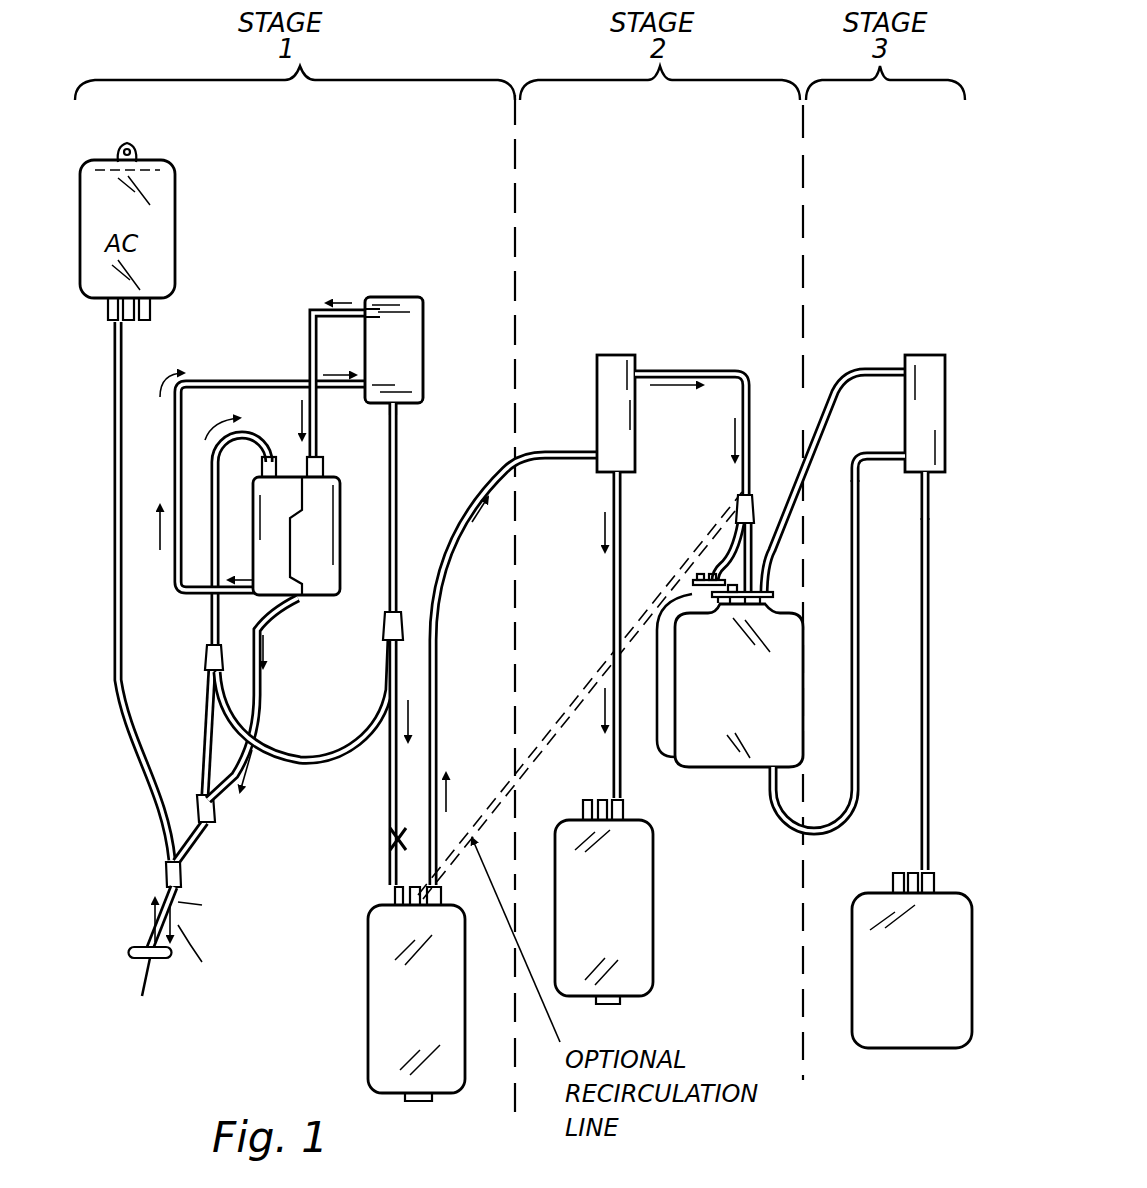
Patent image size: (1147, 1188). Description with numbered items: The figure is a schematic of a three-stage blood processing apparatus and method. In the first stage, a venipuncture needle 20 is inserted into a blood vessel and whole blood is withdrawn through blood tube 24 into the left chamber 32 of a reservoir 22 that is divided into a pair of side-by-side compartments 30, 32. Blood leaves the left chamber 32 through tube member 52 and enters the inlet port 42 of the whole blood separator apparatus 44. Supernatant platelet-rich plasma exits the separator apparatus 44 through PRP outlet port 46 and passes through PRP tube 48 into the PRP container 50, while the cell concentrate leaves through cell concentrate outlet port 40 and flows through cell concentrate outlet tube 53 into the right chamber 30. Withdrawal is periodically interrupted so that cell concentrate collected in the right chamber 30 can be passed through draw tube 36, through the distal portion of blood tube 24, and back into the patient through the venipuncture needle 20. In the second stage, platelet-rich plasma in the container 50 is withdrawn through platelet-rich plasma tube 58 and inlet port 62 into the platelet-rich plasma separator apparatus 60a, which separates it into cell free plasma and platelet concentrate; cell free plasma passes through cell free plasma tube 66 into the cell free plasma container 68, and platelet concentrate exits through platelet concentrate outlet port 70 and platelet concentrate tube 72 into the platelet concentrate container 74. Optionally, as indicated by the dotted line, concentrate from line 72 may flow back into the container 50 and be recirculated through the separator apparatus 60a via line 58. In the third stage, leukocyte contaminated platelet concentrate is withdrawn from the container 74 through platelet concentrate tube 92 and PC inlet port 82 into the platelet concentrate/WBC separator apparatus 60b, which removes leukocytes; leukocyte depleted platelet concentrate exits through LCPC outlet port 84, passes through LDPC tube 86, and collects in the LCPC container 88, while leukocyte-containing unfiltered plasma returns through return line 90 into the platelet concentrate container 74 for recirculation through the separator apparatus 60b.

The venipuncture needle 20 is at (157, 975).
The reservoir 22 is at (312, 592).
The blood tube 24 is at (262, 415).
The right chamber 30 is at (325, 541).
The left chamber 32 is at (285, 571).
The draw tube 36 is at (255, 712).
The cell concentrate outlet port 40 is at (364, 298).
The inlet port 42 is at (364, 356).
The whole blood separator apparatus 44 is at (424, 297).
The PRP outlet port 46 is at (398, 404).
The PRP tube 48 is at (397, 460).
The PRP container 50 is at (368, 1057).
The tube member 52 is at (176, 490).
The cell concentrate outlet tube 53 is at (311, 348).
The platelet-rich plasma tube 58 is at (441, 598).
The platelet-rich plasma separator apparatus 60a is at (627, 355).
The platelet concentrate/WBC separator apparatus 60b is at (915, 355).
The inlet port 62 is at (598, 452).
The cell free plasma tube 66 is at (612, 752).
The cell free plasma container 68 is at (655, 968).
The platelet concentrate outlet port 70 is at (637, 368).
The platelet concentrate tube 72 is at (714, 372).
The platelet concentrate container 74 is at (710, 768).
The PC inlet port 82 is at (905, 455).
The LCPC outlet port 84 is at (922, 478).
The LDPC tube 86 is at (922, 692).
The LCPC container 88 is at (920, 1045).
The return line 90 is at (905, 365).
The platelet concentrate tube 92 is at (860, 625).